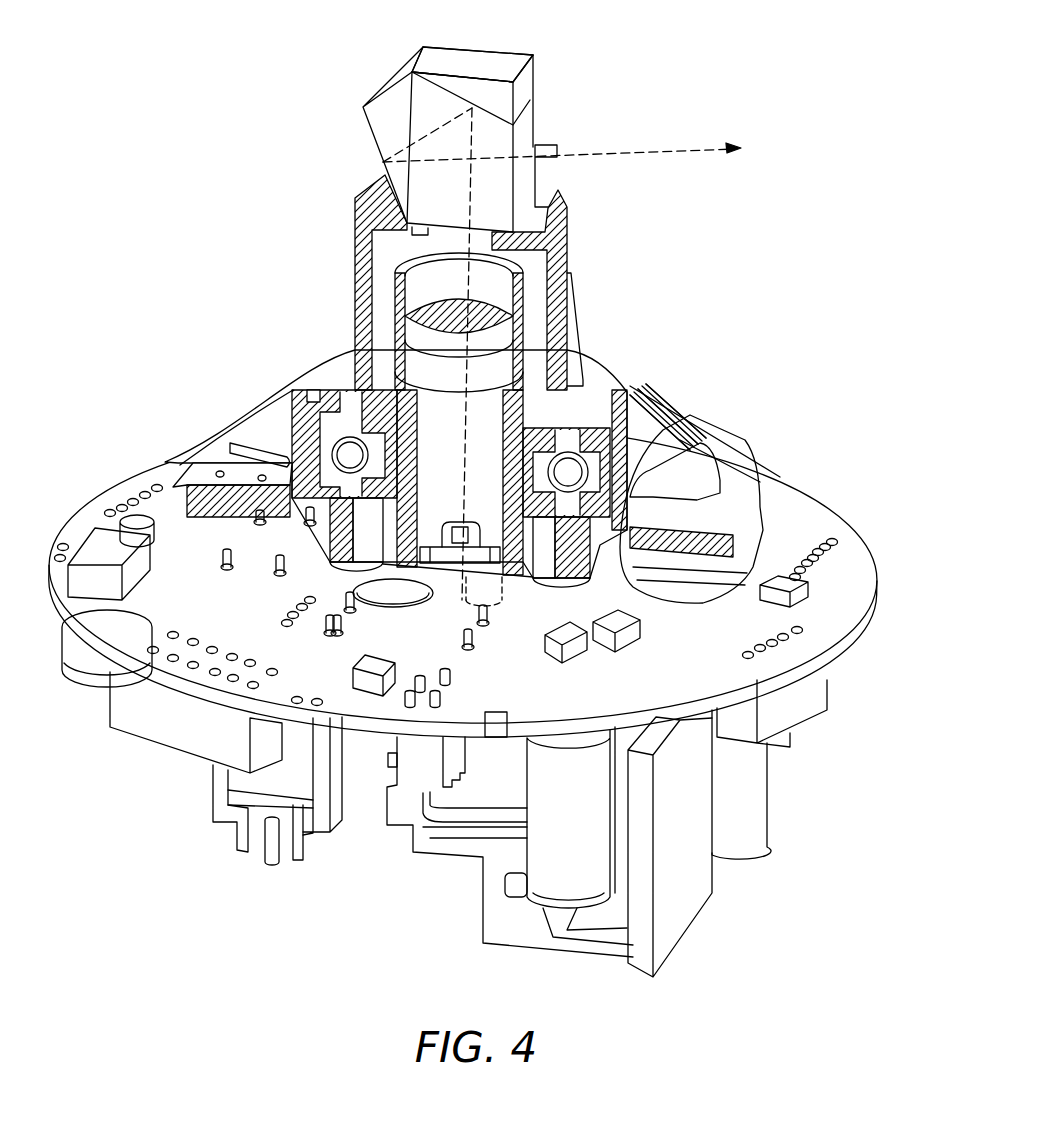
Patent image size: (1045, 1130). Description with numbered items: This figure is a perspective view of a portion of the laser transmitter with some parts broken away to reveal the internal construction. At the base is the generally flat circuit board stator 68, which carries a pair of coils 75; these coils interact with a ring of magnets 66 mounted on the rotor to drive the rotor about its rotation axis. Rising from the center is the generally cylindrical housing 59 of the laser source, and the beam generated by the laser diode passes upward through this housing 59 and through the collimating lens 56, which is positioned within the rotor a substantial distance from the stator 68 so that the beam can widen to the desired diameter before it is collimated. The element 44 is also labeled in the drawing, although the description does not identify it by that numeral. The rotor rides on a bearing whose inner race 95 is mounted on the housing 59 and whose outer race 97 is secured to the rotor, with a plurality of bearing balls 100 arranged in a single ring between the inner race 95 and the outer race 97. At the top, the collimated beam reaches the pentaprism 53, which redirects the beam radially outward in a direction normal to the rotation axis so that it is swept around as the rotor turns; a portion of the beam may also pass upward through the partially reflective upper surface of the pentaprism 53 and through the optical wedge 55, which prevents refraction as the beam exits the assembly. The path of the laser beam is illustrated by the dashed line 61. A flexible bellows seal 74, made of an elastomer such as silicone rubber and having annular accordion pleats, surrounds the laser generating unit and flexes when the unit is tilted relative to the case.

The laser diode 44 is at (453, 566).
The pentaprism 53 is at (374, 123).
The optical wedge 55 is at (483, 82).
The collimating lens 56 is at (522, 308).
The generally cylindrical housing 59 is at (513, 403).
The dashed line 61 is at (632, 151).
The magnets 66 is at (205, 514).
The circuit board stator 68 is at (869, 557).
The flexible bellows seal 74 is at (365, 209).
The coils 75 is at (757, 543).
The inner race 95 is at (550, 432).
The outer race 97 is at (600, 438).
The bearing balls 100 is at (347, 453).